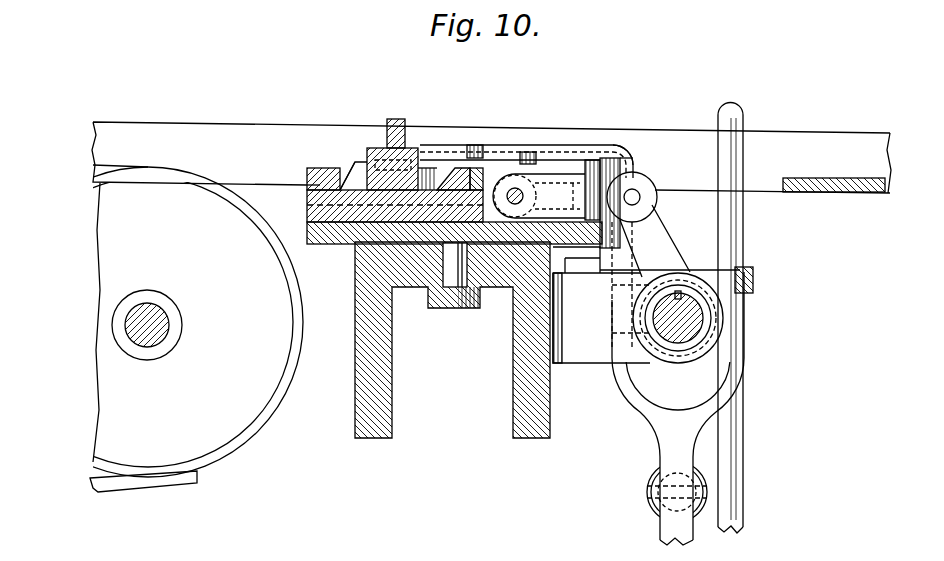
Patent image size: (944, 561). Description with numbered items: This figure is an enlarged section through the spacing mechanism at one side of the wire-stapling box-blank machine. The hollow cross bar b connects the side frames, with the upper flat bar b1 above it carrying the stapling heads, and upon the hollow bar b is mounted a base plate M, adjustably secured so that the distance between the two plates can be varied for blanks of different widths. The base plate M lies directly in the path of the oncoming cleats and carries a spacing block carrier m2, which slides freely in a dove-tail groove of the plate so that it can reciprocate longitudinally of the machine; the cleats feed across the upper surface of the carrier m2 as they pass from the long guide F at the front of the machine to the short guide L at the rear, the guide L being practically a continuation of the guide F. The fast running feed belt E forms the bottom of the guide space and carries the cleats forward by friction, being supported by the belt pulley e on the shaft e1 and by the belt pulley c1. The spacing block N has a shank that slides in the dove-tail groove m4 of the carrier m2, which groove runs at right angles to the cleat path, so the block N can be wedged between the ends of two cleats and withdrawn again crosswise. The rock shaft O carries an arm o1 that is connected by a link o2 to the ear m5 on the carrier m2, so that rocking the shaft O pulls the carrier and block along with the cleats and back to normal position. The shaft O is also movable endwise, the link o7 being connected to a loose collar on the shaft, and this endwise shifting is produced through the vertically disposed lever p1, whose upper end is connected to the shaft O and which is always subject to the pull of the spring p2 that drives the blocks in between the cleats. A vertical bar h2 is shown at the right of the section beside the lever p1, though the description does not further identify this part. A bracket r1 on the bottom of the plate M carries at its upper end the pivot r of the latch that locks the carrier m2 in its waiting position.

The guide F is at (150, 138).
The guide L is at (832, 146).
The belt pulley e is at (258, 355).
The shaft e1 is at (150, 312).
The feed belt E is at (196, 473).
The base plate M is at (340, 244).
The spacing block carrier m2 is at (307, 185).
The dove-tail groove m4 is at (332, 186).
The spacing block N is at (378, 148).
The ear m5 is at (488, 186).
The belt pulley c1 is at (546, 192).
The link o2 is at (592, 170).
The link o7 is at (602, 150).
The pivot r is at (628, 160).
The arm o1 is at (664, 248).
The bracket r1 is at (591, 254).
The rock shaft O is at (690, 306).
The lever p1 is at (680, 445).
The spring p2 is at (655, 490).
The vertical bar h2 is at (735, 520).
The hollow cross bar b is at (390, 424).
The upper flat bar b1 is at (449, 275).